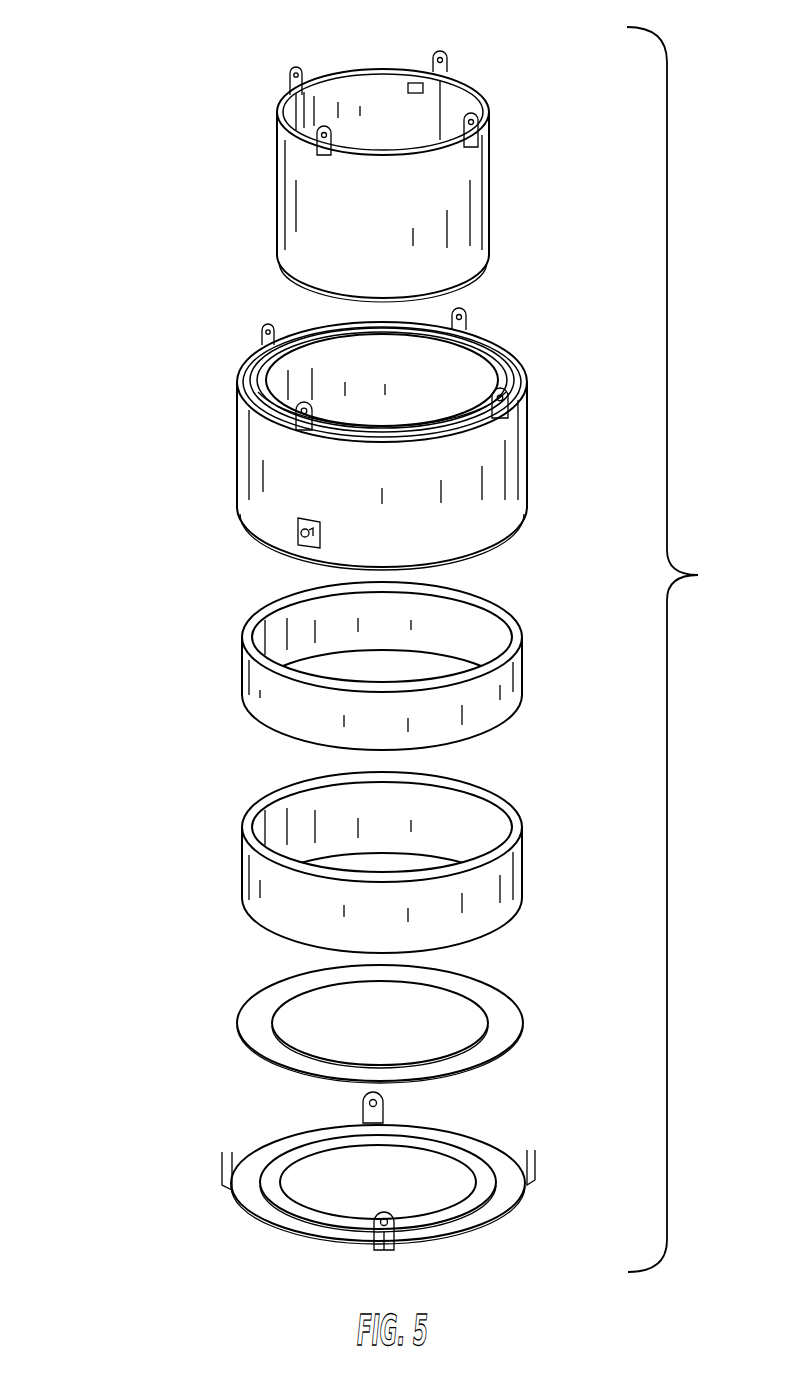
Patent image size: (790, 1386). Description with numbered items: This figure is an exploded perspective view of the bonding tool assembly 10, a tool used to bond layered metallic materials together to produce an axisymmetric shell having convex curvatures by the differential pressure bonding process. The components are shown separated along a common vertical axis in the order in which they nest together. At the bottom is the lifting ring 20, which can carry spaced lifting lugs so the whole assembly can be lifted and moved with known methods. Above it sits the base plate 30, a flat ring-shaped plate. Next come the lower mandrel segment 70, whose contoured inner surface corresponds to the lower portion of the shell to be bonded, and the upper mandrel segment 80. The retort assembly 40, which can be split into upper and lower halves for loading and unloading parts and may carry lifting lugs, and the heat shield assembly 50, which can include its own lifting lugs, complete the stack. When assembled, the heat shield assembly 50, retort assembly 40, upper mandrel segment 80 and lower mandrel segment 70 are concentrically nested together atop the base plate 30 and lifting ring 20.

The bonding tool assembly 10 is at (136, 42).
The lifting ring 20 is at (500, 1155).
The base plate 30 is at (240, 1012).
The retort assembly 40 is at (510, 458).
The heat shield assembly 50 is at (290, 210).
The lower mandrel segment 70 is at (518, 872).
The upper mandrel segment 80 is at (247, 678).